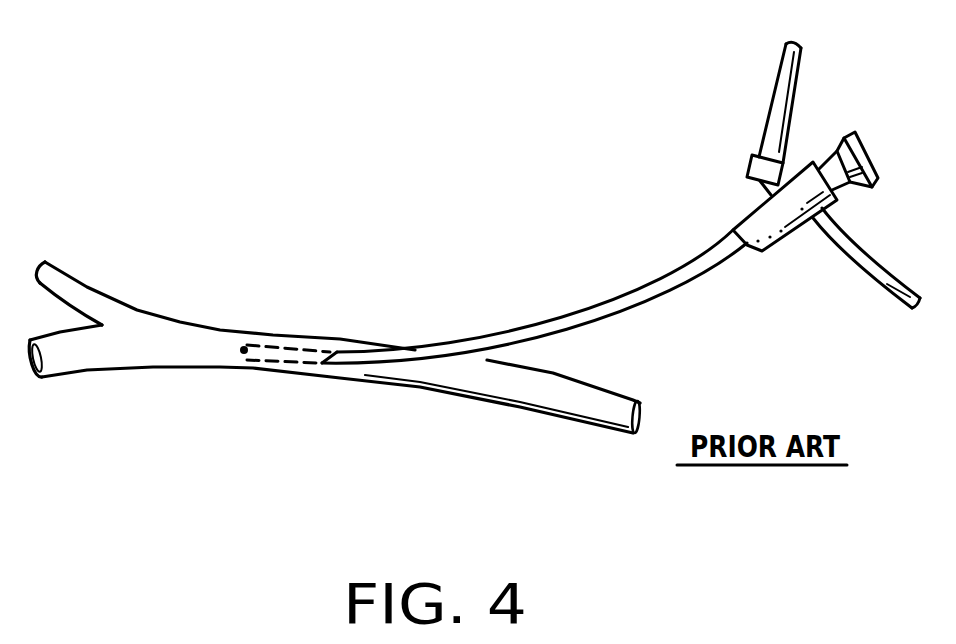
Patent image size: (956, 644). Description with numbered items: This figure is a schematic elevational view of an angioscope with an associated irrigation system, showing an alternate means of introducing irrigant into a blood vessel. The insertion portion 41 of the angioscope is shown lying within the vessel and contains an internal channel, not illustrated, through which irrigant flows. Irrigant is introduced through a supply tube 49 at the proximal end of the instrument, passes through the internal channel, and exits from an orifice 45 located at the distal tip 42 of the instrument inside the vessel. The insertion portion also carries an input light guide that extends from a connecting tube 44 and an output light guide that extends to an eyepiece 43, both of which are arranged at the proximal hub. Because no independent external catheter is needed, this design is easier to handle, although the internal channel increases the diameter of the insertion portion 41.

The insertion portion 41 is at (582, 311).
The distal tip 42 is at (265, 368).
The eyepiece 43 is at (846, 139).
The connecting tube 44 is at (855, 246).
The orifice 45 is at (244, 347).
The supply tube 49 is at (777, 101).